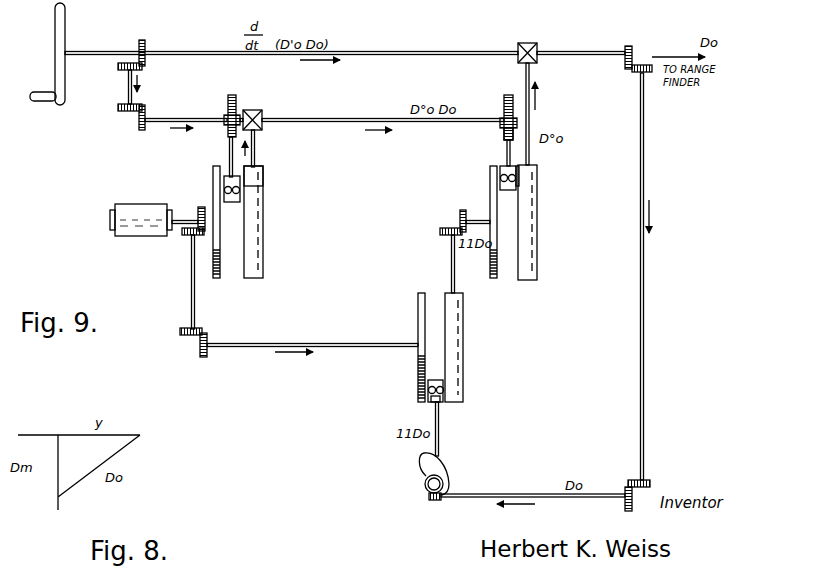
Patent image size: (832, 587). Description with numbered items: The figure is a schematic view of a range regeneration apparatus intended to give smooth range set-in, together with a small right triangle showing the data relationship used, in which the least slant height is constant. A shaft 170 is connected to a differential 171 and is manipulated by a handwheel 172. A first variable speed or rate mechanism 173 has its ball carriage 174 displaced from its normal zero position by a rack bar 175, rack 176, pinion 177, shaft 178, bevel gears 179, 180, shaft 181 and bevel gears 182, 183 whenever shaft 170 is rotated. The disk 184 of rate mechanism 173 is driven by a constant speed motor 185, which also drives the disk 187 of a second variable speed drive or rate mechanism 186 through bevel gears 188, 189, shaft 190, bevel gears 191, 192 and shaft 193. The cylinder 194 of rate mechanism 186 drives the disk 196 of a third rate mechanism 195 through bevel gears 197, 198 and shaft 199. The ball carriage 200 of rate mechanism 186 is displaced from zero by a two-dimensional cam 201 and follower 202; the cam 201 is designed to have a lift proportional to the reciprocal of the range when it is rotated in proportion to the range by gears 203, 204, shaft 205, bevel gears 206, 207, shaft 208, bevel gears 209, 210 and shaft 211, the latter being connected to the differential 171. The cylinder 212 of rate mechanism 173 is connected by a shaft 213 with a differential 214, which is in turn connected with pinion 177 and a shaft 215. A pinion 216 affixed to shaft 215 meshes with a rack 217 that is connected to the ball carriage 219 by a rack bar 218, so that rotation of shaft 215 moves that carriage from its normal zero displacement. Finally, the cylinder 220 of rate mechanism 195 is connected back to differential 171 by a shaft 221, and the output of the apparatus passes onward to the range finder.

The shaft 170 is at (176, 54).
The differential 171 is at (527, 43).
The handwheel 172 is at (56, 38).
The first variable speed or rate mechanism 173 is at (247, 180).
The ball carriage 174 is at (222, 188).
The rack bar 175 is at (228, 148).
The rack 176 is at (234, 95).
The pinion 177 is at (224, 118).
The shaft 178 is at (162, 117).
The bevel gear 179 is at (141, 132).
The bevel gear 180 is at (122, 112).
The shaft 181 is at (127, 87).
The bevel gear 182 is at (117, 66).
The bevel gear 183 is at (148, 60).
The disk 184 is at (215, 279).
The constant speed motor 185 is at (140, 210).
The second variable speed drive or rate mechanism 186 is at (447, 378).
The disk 187 is at (418, 365).
The bevel gear 188 is at (200, 210).
The bevel gear 189 is at (188, 236).
The shaft 190 is at (190, 280).
The bevel gear 191 is at (180, 334).
The bevel gear 192 is at (207, 339).
The shaft 193 is at (320, 347).
The cylinder 194 is at (455, 361).
The third rate mechanism 195 is at (519, 184).
The disk 196 is at (490, 194).
The bevel gear 197 is at (460, 216).
The bevel gear 198 is at (445, 232).
The shaft 199 is at (450, 262).
The ball carriage 200 is at (430, 402).
The two-dimensional cam 201 is at (446, 472).
The follower 202 is at (441, 437).
The gear 203 is at (424, 488).
The gear 204 is at (430, 500).
The shaft 205 is at (497, 498).
The bevel gear 206 is at (625, 505).
The bevel gear 207 is at (652, 486).
The shaft 208 is at (644, 320).
The bevel gear 209 is at (635, 72).
The bevel gear 210 is at (632, 52).
The shaft 211 is at (566, 58).
The cylinder 212 is at (262, 220).
The shaft 213 is at (258, 156).
The differential 214 is at (260, 113).
The shaft 215 is at (343, 125).
The pinion 216 is at (504, 118).
The rack 217 is at (505, 135).
The rack bar 218 is at (506, 162).
The ball carriage 219 is at (499, 177).
The cylinder 220 is at (537, 228).
The shaft 221 is at (529, 130).